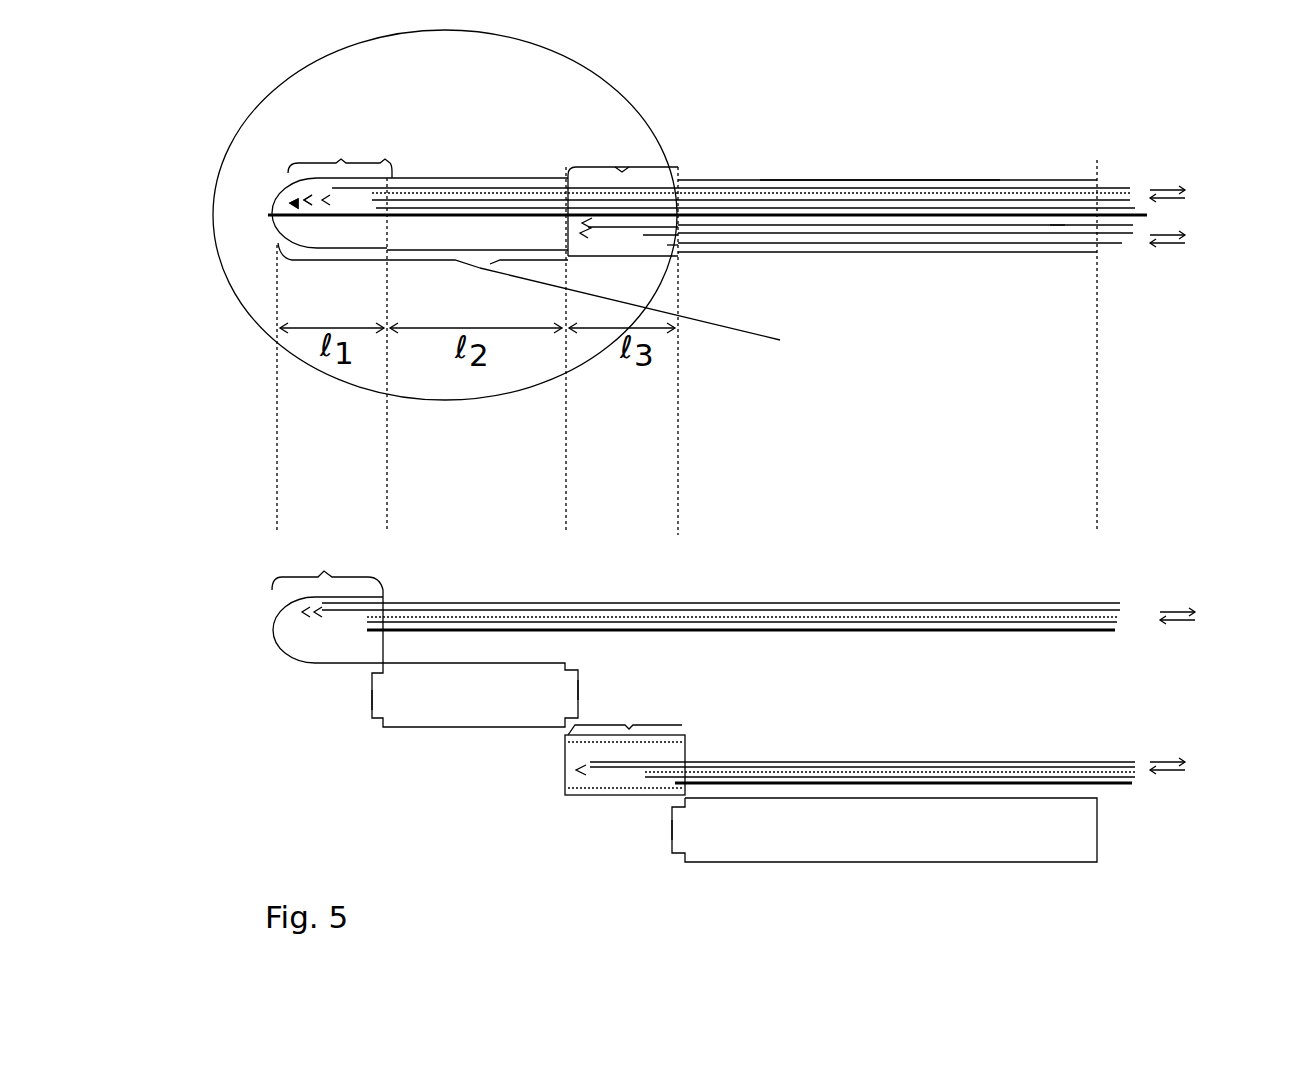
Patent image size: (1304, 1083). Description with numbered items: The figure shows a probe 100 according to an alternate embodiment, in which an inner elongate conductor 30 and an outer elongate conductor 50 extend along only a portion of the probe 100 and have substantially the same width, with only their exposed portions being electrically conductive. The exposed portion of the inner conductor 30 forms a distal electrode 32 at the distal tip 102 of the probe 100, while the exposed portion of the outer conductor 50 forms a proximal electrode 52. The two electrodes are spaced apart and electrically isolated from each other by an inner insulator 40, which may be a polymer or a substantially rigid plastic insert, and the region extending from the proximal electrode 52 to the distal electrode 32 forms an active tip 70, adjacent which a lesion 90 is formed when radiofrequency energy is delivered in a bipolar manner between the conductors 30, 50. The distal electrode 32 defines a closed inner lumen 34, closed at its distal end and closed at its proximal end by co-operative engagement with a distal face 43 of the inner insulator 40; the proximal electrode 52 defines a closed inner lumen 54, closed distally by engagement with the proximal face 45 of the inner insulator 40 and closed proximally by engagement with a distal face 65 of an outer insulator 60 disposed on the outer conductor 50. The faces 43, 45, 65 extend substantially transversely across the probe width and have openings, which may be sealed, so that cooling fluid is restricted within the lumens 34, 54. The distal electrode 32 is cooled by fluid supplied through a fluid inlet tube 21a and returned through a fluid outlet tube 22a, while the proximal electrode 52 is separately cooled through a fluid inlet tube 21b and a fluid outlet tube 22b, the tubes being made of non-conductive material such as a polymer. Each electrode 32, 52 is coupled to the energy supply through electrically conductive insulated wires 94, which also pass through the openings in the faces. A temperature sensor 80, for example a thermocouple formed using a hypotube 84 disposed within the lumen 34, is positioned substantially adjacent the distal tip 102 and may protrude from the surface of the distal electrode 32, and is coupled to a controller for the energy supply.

The probe 100 is at (895, 166).
The fluid inlet tube 21a is at (1122, 195).
The fluid inlet tube 21b is at (1135, 235).
The fluid outlet tube 22a is at (1107, 185).
The fluid outlet tube 22b is at (1104, 228).
The inner elongate conductor 30 is at (383, 162).
The distal electrode 32 is at (340, 158).
The inner lumen 34 is at (293, 195).
The inner insulator 40 is at (500, 186).
The distal face of inner insulator 43 is at (370, 700).
The proximal face of inner insulator 45 is at (580, 690).
The outer elongate conductor 50 is at (668, 178).
The proximal electrode 52 is at (622, 165).
The inner lumen 54 is at (585, 215).
The outer insulator 60 is at (806, 180).
The distal face of outer insulator 65 is at (674, 838).
The active tip 70 is at (652, 314).
The temperature sensor 80 is at (280, 212).
The thermocouple hypotube 84 is at (916, 213).
The lesion 90 is at (212, 232).
The insulated wires 94 is at (1055, 232).
The distal tip 102 is at (280, 215).